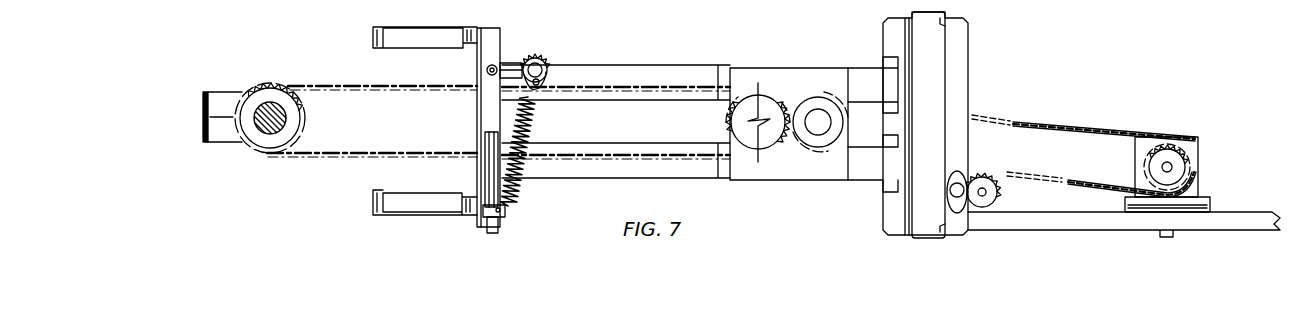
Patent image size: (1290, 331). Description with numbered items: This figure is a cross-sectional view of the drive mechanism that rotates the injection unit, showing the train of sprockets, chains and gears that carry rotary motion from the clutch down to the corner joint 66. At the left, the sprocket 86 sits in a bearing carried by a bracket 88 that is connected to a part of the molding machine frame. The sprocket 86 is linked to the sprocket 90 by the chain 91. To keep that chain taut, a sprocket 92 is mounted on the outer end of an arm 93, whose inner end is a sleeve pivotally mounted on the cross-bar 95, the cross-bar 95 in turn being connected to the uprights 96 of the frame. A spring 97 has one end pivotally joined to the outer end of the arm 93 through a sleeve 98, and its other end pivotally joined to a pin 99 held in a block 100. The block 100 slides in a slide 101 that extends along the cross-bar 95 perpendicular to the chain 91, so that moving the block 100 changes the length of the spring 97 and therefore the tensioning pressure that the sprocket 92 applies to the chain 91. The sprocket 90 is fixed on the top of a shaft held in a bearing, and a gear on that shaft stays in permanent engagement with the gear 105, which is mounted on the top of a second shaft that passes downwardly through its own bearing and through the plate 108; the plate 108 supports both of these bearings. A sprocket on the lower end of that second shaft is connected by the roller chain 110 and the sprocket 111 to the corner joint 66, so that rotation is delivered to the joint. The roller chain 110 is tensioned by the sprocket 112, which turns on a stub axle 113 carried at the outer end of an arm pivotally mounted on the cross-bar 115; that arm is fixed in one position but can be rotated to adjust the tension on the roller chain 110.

The corner joint 66 is at (1198, 138).
The sprocket 86 is at (285, 90).
The bracket 88 is at (203, 113).
The sprocket 90 is at (773, 97).
The chain 91 is at (590, 87).
The sprocket 92 is at (543, 54).
The arm 93 is at (510, 62).
The cross-bar 95 is at (492, 28).
The uprights 96 is at (463, 27).
The spring 97 is at (526, 141).
The sleeve 98 is at (538, 84).
The pin 99 is at (508, 211).
The block 100 is at (500, 218).
The slide 101 is at (487, 172).
The gear 105 is at (800, 105).
The plate 108 is at (765, 57).
The roller chain 110 is at (1050, 124).
The sprocket 111 is at (1182, 116).
The sprocket 112 is at (983, 172).
The stub axle 113 is at (990, 203).
The cross-bar 115 is at (958, 93).